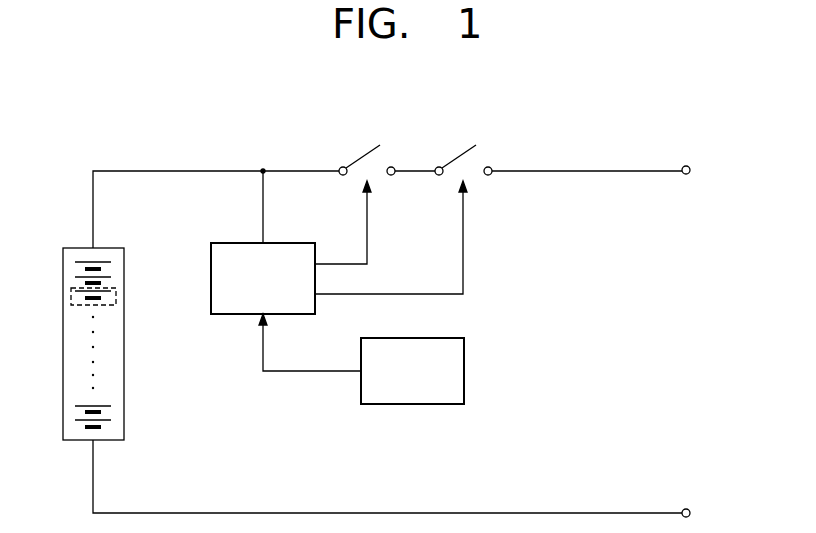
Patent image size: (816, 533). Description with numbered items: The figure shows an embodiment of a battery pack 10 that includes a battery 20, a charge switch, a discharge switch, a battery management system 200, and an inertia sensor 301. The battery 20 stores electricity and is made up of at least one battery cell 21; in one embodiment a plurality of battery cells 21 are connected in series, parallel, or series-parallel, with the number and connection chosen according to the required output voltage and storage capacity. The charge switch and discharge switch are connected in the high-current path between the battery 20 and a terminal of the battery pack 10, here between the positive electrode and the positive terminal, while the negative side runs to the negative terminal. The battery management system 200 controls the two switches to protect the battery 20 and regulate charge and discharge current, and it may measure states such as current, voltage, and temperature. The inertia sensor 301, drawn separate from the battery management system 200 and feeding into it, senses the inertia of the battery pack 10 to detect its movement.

The battery pack 10 is at (735, 265).
The battery 20 is at (73, 248).
The battery cell 21 is at (116, 300).
The battery management system (BMS) 200 is at (231, 243).
The inertia sensor 301 is at (436, 404).